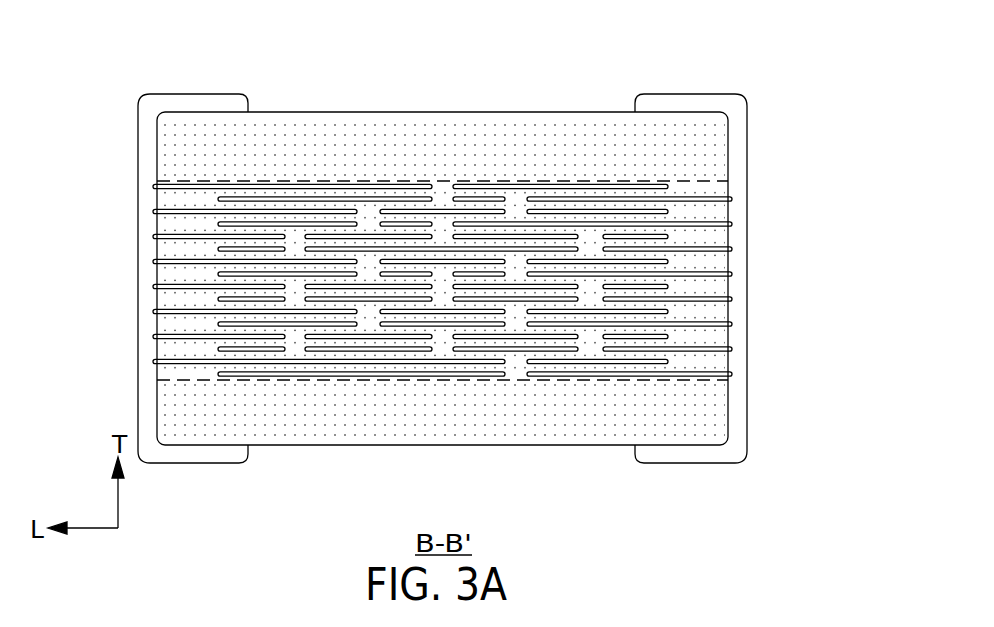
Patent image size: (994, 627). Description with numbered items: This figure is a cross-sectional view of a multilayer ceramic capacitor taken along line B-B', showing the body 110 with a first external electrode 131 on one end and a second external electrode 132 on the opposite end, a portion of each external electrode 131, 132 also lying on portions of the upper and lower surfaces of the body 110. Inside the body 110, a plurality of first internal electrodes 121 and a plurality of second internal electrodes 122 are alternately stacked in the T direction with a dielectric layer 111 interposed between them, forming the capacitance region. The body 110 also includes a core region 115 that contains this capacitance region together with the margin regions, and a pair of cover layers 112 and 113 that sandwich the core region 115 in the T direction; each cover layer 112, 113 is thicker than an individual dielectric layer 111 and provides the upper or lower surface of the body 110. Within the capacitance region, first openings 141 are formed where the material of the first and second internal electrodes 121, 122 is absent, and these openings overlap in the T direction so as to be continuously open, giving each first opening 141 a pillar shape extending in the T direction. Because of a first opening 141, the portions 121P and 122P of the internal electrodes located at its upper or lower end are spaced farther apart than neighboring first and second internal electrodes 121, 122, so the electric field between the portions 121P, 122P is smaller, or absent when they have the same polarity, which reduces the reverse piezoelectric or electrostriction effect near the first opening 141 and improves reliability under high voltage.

The body 110 is at (553, 93).
The dielectric layer 111 is at (465, 194).
The cover layer 112 is at (385, 137).
The cover layer 113 is at (517, 427).
The core region 115 is at (312, 163).
The first internal electrode 121 is at (176, 212).
The second internal electrode 122 is at (710, 224).
The portion of first internal electrode located at end of first opening 121P is at (295, 360).
The portion of second internal electrode located at end of first opening 122P is at (295, 322).
The first external electrode 131 is at (148, 167).
The second external electrode 132 is at (733, 150).
The first opening 141 is at (442, 345).